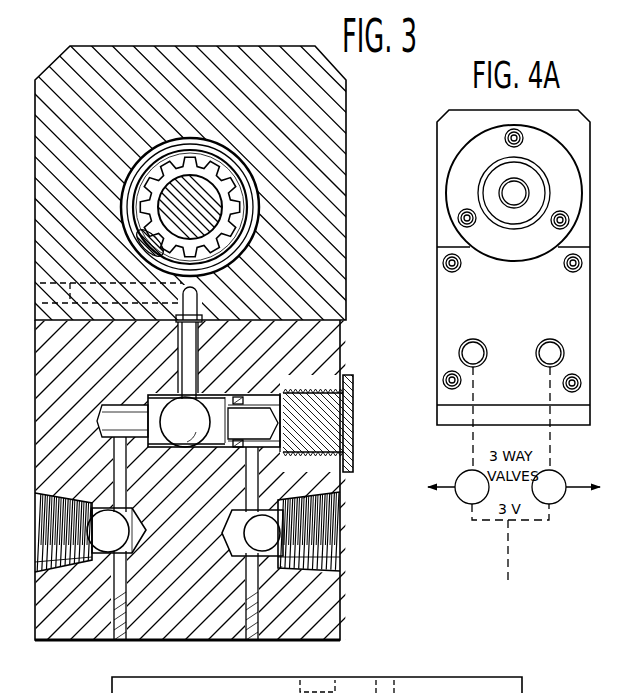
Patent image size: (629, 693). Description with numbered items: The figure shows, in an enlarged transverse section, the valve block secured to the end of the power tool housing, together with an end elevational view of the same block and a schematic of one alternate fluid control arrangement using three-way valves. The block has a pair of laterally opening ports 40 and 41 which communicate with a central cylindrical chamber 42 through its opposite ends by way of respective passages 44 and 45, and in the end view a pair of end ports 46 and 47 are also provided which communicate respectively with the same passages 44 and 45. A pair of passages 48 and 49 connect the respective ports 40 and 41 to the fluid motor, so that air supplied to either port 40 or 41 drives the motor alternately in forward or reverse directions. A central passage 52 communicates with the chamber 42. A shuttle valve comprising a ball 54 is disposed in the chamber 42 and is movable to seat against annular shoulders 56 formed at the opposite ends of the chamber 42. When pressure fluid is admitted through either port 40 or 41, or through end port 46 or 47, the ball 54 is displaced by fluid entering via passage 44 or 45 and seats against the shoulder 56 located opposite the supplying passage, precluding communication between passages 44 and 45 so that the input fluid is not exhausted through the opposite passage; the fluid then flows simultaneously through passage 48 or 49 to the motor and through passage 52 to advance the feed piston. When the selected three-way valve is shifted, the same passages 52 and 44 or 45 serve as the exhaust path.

In FIG. 3, the laterally opening port 40 is at (70, 560).
In FIG. 3, the laterally opening port 41 is at (305, 544).
In FIG. 3, the central cylindrical chamber 42 is at (152, 394).
In FIG. 3, the passage 44 is at (126, 466).
In FIG. 3, the passage 45 is at (247, 492).
In FIG. 4A, the end port 46 is at (476, 352).
In FIG. 4A, the end port 47 is at (548, 354).
In FIG. 3, the passage 48 is at (112, 548).
In FIG. 3, the passage 49 is at (272, 548).
In FIG. 3, the central passage 52 is at (196, 344).
In FIG. 3, the ball 54 is at (224, 398).
In FIG. 3, the annular shoulder 56 is at (268, 424).